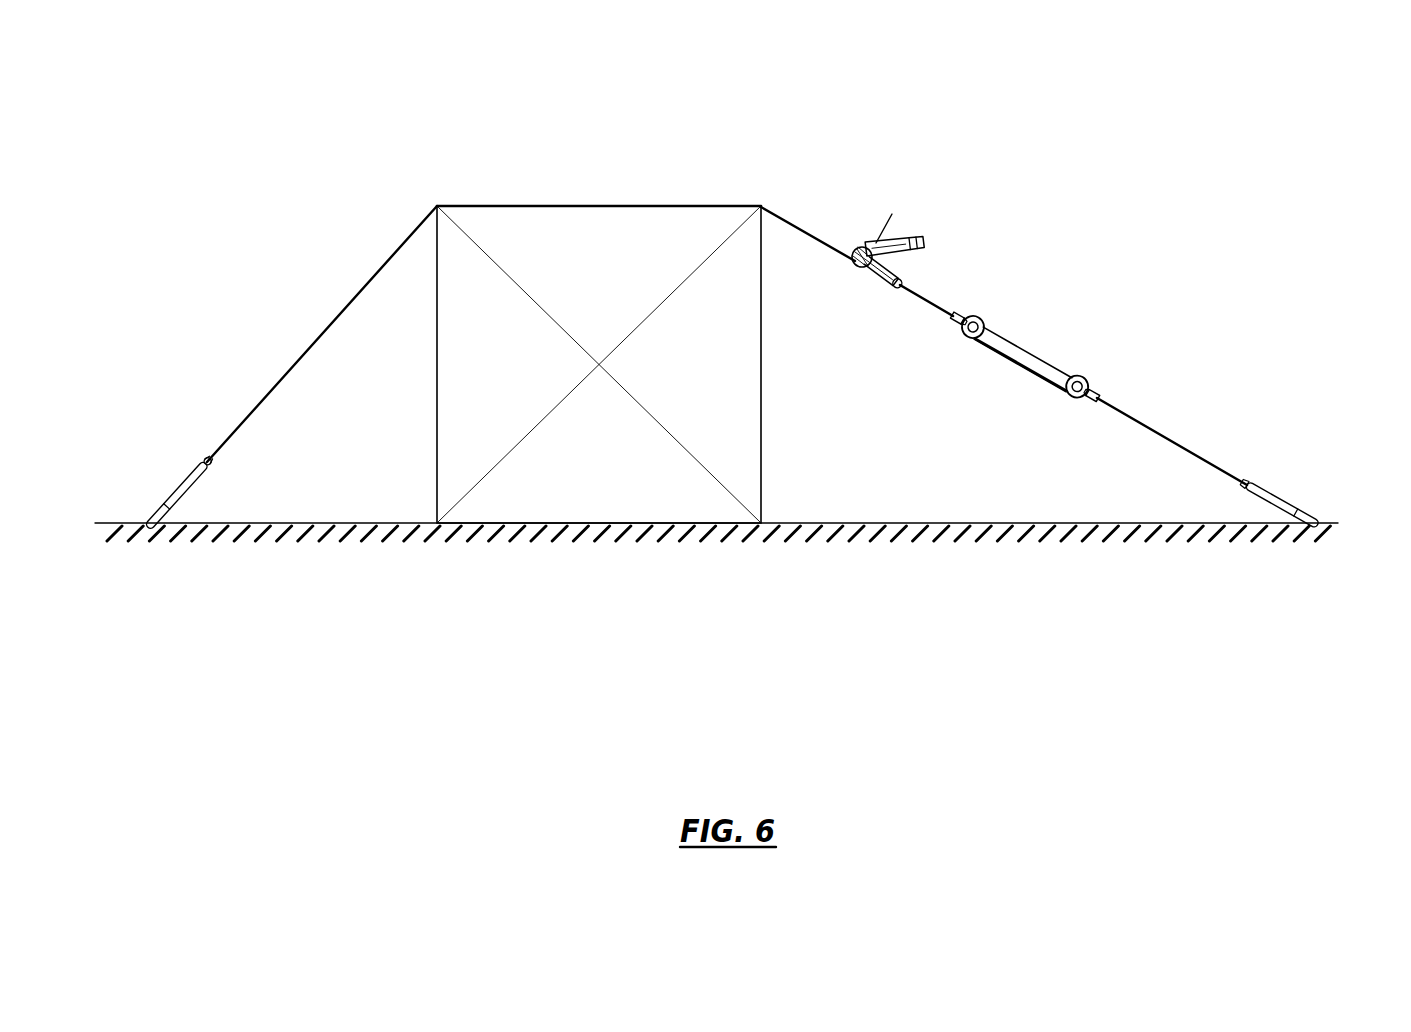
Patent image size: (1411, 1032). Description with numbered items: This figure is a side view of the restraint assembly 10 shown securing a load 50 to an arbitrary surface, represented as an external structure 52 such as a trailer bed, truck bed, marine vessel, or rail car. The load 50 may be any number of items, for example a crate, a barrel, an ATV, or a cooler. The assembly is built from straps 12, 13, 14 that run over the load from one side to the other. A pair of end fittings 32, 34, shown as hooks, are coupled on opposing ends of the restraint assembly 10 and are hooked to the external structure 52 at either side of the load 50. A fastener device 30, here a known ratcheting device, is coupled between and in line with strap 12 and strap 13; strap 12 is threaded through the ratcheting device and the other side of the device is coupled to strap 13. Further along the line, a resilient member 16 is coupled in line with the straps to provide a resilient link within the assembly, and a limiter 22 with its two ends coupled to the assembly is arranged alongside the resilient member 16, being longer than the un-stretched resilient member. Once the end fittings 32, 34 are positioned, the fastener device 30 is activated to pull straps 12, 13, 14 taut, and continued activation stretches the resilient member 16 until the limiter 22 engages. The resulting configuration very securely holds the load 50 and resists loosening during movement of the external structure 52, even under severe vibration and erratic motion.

The restraint assembly 10 is at (388, 188).
The strap 12 is at (302, 355).
The strap 13 is at (920, 297).
The strap 14 is at (1168, 438).
The resilient member 16 is at (1019, 356).
The limiter 22 is at (993, 357).
The fastener device 30 is at (901, 226).
The end fitting 32 is at (177, 486).
The end fitting 34 is at (1268, 490).
The load 50 is at (761, 395).
The external structure 52 is at (895, 522).